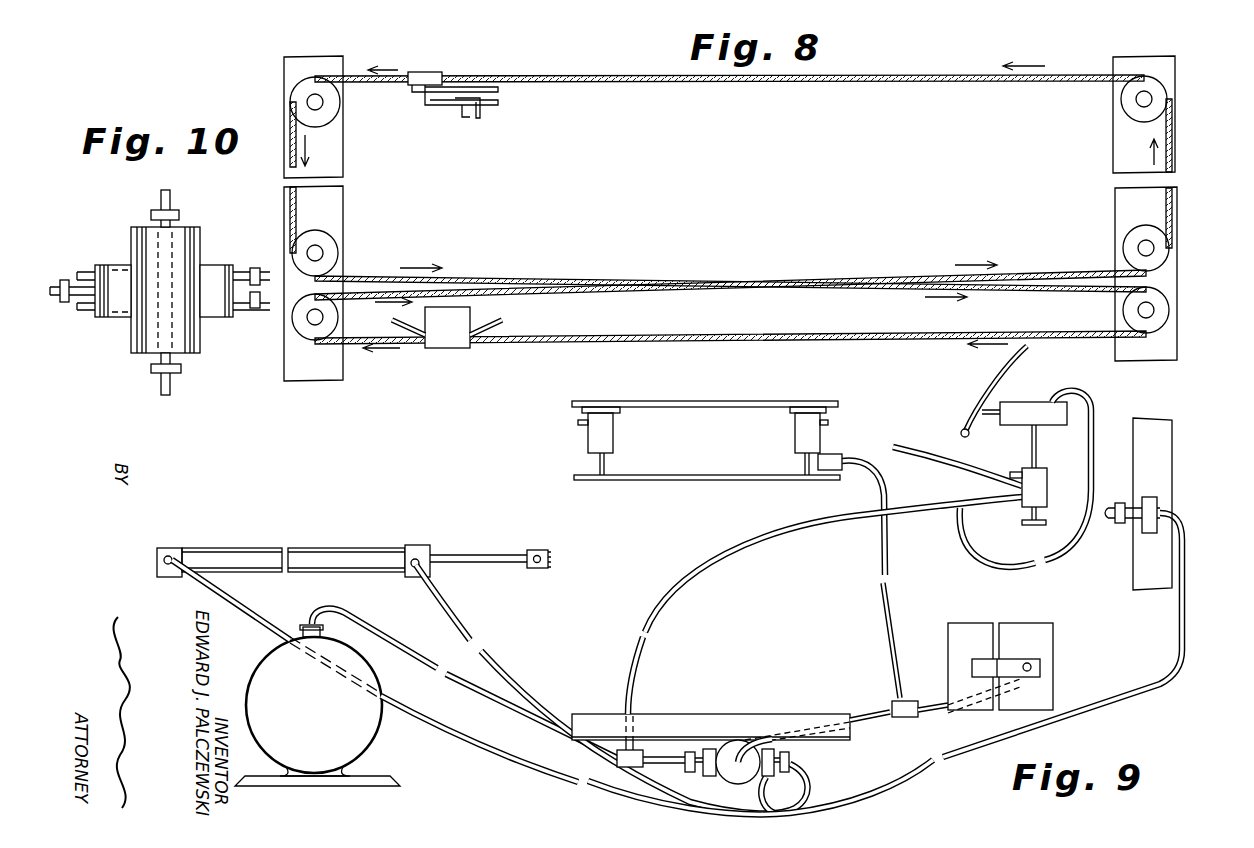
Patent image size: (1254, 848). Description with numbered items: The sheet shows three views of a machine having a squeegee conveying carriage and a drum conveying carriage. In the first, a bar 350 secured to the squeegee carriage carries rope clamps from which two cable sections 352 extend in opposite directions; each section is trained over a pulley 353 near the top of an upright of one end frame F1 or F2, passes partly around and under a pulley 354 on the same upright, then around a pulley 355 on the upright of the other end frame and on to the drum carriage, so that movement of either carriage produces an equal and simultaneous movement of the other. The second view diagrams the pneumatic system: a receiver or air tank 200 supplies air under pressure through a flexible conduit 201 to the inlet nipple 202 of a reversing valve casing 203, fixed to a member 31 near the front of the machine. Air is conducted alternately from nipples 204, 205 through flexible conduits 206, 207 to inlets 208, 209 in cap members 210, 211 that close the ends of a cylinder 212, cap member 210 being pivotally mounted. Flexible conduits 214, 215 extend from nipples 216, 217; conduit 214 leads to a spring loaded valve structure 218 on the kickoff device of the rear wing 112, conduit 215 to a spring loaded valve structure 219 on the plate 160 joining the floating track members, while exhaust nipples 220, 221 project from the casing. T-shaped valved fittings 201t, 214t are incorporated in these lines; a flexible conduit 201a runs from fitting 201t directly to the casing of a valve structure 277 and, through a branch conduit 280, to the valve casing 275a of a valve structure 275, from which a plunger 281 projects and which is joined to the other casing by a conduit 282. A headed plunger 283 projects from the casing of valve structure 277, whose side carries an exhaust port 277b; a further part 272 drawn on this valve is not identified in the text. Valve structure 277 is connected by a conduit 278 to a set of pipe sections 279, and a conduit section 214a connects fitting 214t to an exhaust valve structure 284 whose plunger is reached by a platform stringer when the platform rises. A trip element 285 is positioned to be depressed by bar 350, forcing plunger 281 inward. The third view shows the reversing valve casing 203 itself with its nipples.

In FIG. 8, the cable sections 352 is at (924, 76).
In FIG. 8, the pulley 353 is at (333, 110).
In FIG. 8, the bar 350 is at (412, 92).
In FIG. 8, the pulley 354 is at (335, 255).
In FIG. 8, the pulley 355 is at (311, 351).
In FIG. 8, the right frame F1 is at (1113, 155).
In FIG. 8, the left frame F2 is at (345, 157).
In FIG. 10, the reversing valve casing 203 is at (134, 338).
In FIG. 9, the reversing valve casing 203 is at (757, 742).
In FIG. 10, the flexible conduit 214 is at (170, 195).
In FIG. 9, the flexible conduit 214 is at (920, 715).
In FIG. 10, the nipple 216 is at (172, 220).
In FIG. 10, the flexible conduit 215 is at (172, 388).
In FIG. 9, the flexible conduit 215 is at (980, 752).
In FIG. 10, the nipple 217 is at (176, 360).
In FIG. 10, the exhaust nipple 220 is at (96, 264).
In FIG. 10, the nipple 204 is at (237, 268).
In FIG. 10, the nipple 205 is at (236, 312).
In FIG. 10, the inlet nipple 202 is at (80, 272).
In FIG. 9, the inlet nipple 202 is at (692, 772).
In FIG. 10, the exhaust nipple 221 is at (82, 312).
In FIG. 10, the flexible conduit 201 is at (53, 300).
In FIG. 9, the flexible conduit 201 is at (418, 655).
In FIG. 9, the set of pipe sections 279 is at (829, 424).
In FIG. 9, the exhaust valve structure 284 is at (826, 463).
In FIG. 9, the receiver or air tank 200 is at (270, 668).
In FIG. 9, the cap member 210 is at (163, 546).
In FIG. 9, the inlet 208 is at (188, 548).
In FIG. 9, the cylinder 212 is at (348, 556).
In FIG. 9, the cap member 211 is at (420, 545).
In FIG. 9, the inlet 209 is at (440, 553).
In FIG. 9, the flexible conduit 206 is at (200, 590).
In FIG. 9, the flexible conduit 207 is at (428, 590).
In FIG. 9, the angle member 31 is at (712, 716).
In FIG. 9, the flexible conduit 201a is at (668, 605).
In FIG. 9, the T-shaped valved fitting 201t is at (636, 751).
In FIG. 9, the conduit section 214a is at (898, 615).
In FIG. 9, the T-shaped valved fitting 214t is at (892, 705).
In FIG. 9, the rear wing 112 is at (1026, 624).
In FIG. 9, the spring loaded valve structure 218 is at (1035, 652).
In FIG. 9, the trip element 285 is at (1028, 348).
In FIG. 9, the plunger 281 is at (988, 416).
In FIG. 9, the valve structure 275 is at (1032, 404).
In FIG. 9, the valve casing 275a is at (1055, 422).
In FIG. 9, the conduit 282 is at (1031, 452).
In FIG. 9, the branch conduit 280 is at (1094, 415).
In FIG. 9, the conduit 278 is at (933, 456).
In FIG. 9, the valve structure 277 is at (1068, 469).
In FIG. 9, the exhaust port 277b is at (1010, 476).
In FIG. 9, the valve element 272 is at (1038, 497).
In FIG. 9, the headed plunger 283 is at (1044, 526).
In FIG. 9, the plate 160 is at (1165, 487).
In FIG. 9, the spring loaded valve structure 219 is at (1112, 520).